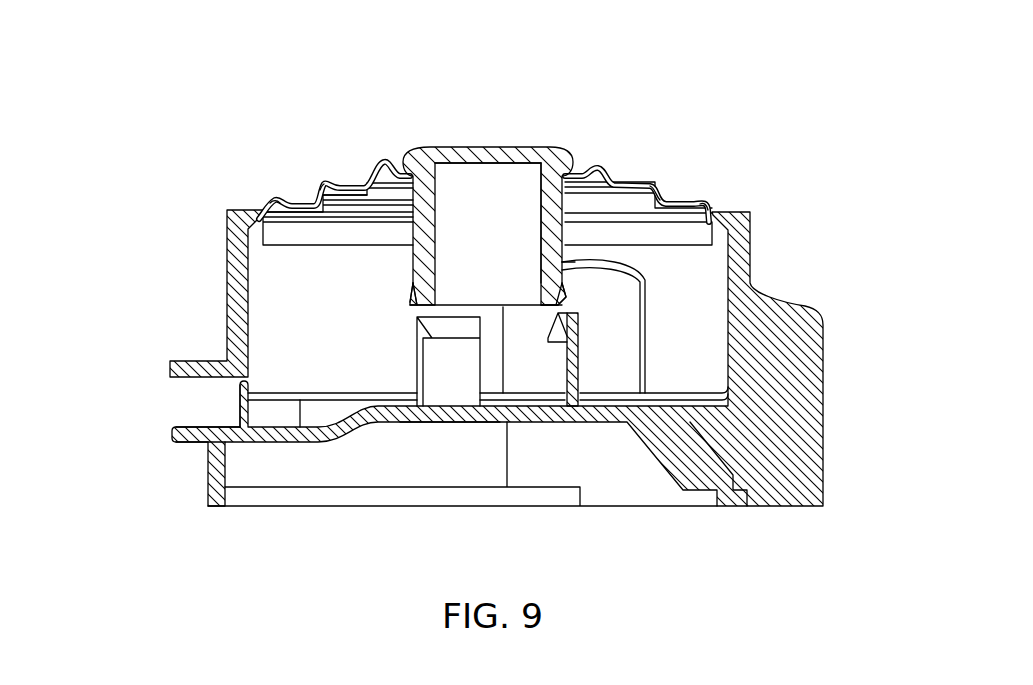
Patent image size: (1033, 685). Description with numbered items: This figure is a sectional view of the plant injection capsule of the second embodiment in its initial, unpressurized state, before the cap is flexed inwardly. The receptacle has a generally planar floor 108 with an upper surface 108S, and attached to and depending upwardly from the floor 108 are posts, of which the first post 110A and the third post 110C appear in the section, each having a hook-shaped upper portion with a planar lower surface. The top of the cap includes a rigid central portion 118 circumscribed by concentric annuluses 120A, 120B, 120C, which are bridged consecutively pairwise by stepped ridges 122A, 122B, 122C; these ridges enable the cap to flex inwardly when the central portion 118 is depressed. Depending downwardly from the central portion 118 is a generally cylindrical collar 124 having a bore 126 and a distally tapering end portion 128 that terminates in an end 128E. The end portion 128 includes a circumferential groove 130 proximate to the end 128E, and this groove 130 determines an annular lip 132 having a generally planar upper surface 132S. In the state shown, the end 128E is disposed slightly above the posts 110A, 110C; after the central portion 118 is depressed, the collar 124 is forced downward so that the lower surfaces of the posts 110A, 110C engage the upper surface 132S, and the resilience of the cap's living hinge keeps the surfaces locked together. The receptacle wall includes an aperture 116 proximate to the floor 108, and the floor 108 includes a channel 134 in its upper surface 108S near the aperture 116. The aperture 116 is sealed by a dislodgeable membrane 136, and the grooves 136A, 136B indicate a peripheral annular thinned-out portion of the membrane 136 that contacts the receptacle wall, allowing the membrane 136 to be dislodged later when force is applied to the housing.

The floor 108 is at (423, 423).
The upper surface 108S is at (367, 397).
The first post 110A is at (579, 343).
The third post 110C is at (415, 344).
The aperture 116 is at (223, 395).
The rigid central portion 118 is at (478, 147).
The first annulus 120A is at (384, 162).
The second annulus 120B is at (335, 195).
The third annulus 120C is at (272, 199).
The first stepped ridge 122A is at (357, 181).
The second stepped ridge 122B is at (307, 192).
The third stepped ridge 122C is at (263, 200).
The collar 124 is at (547, 212).
The bore 126 is at (505, 239).
The distally tapering end portion 128 is at (547, 287).
The end 128E is at (417, 306).
The circumferential groove 130 is at (418, 263).
The annular lip 132 is at (560, 296).
The upper surface 132S is at (412, 277).
The channel 134 is at (300, 400).
The dislodgeable membrane 136 is at (237, 405).
The groove 136A is at (240, 383).
The groove 136B is at (177, 423).